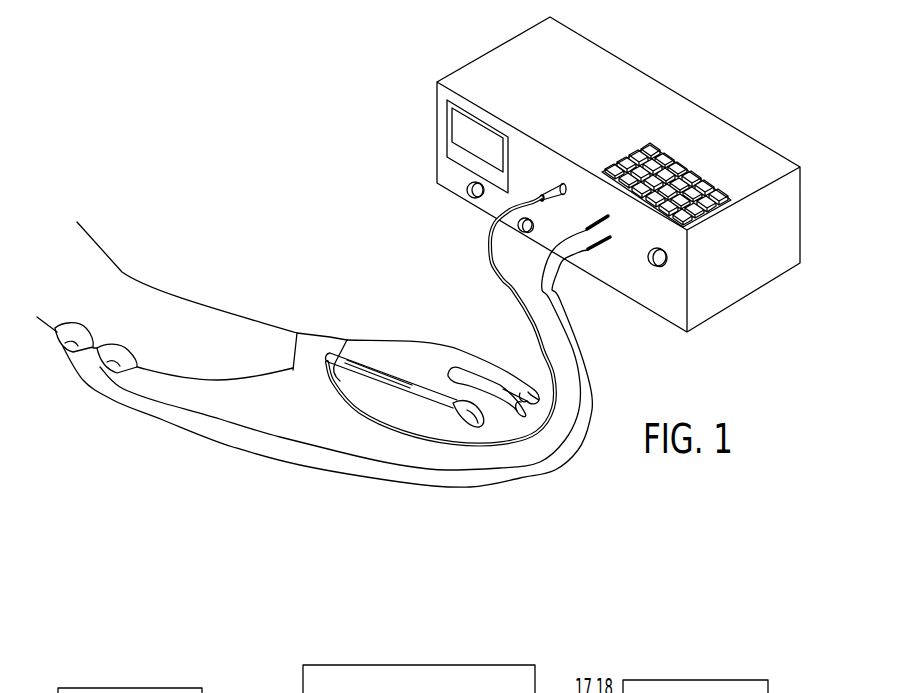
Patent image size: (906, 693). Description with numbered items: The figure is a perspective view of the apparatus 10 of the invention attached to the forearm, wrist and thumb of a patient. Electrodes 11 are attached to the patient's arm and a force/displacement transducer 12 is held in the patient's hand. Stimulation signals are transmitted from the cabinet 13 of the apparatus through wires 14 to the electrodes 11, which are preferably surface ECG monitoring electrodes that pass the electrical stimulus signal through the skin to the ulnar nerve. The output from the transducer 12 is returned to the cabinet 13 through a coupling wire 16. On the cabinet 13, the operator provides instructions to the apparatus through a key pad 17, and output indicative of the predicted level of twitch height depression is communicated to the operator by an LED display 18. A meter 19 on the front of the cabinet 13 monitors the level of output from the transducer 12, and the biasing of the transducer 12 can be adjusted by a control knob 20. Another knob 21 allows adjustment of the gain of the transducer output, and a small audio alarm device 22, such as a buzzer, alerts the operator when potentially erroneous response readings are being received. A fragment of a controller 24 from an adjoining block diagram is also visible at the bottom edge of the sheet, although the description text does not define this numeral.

The apparatus 10 is at (627, 51).
The electrodes 11 is at (103, 357).
The force/displacement transducer 12 is at (353, 366).
The cabinet 13 is at (693, 100).
The wires 14 is at (590, 377).
The coupling wire 16 is at (533, 333).
The key pad 17 is at (633, 157).
The LED display 18 is at (697, 173).
The meter 19 is at (447, 130).
The control knob 20 is at (468, 196).
The knob 21 is at (520, 235).
The audio alarm device 22 is at (668, 255).
The controller 24 is at (303, 683).